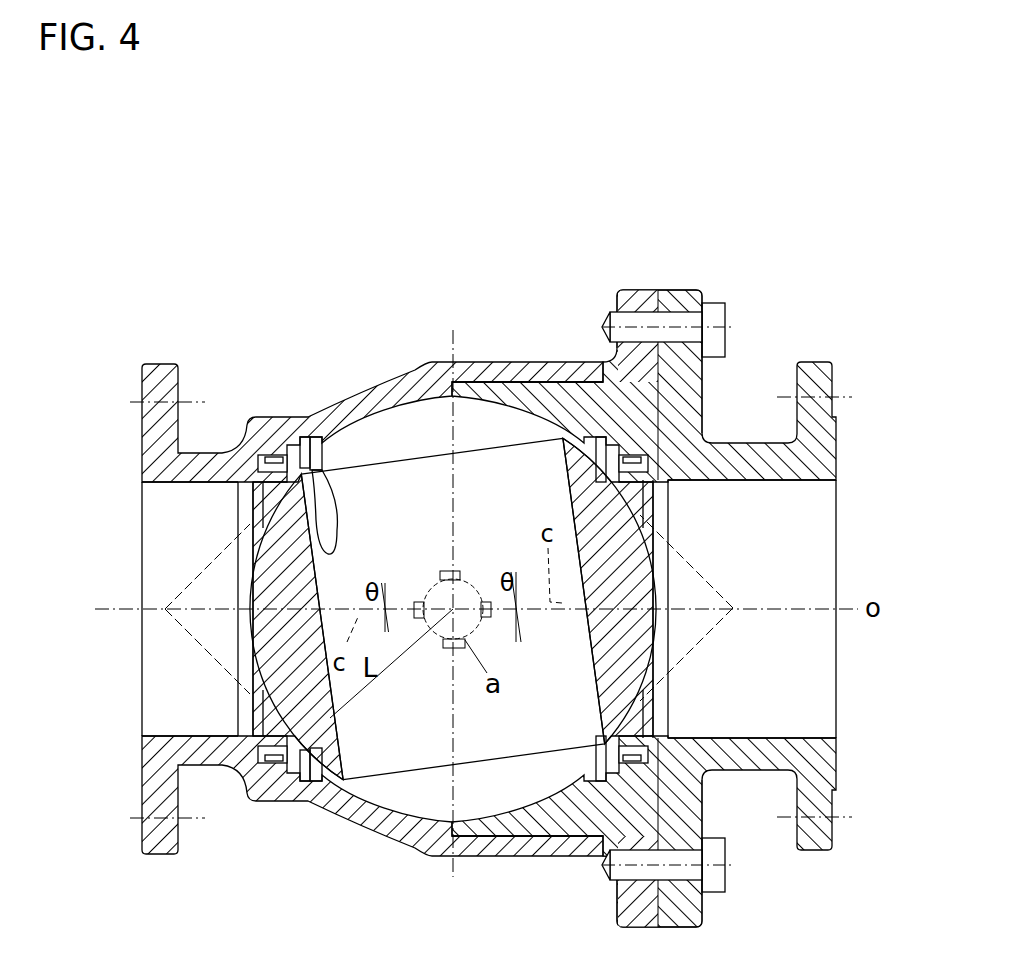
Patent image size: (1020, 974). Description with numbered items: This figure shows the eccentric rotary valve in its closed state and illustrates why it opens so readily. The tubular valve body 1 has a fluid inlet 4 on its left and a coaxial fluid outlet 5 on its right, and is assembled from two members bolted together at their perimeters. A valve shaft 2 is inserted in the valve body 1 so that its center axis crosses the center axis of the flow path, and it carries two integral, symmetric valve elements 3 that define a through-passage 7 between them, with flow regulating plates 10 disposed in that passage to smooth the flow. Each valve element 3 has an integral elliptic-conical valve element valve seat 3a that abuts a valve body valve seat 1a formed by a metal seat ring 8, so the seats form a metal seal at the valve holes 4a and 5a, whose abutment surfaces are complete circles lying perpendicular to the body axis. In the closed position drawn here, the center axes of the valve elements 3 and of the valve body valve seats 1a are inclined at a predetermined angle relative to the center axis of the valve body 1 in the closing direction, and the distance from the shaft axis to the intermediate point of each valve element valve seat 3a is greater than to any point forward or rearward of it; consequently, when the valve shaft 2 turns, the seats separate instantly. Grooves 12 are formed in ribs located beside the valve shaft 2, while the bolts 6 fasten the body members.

The valve body 1 is at (503, 863).
The valve body valve seat 1a is at (577, 750).
The valve shaft 2 is at (487, 673).
The valve element 3 is at (507, 483).
The valve element valve seat 3a is at (262, 462).
The fluid inlet 4 is at (165, 647).
The valve hole 4a is at (262, 703).
The fluid outlet 5 is at (763, 527).
The valve hole 5a is at (643, 707).
The bolt 6 is at (666, 325).
The through-passage 7 is at (317, 436).
The seat ring 8 is at (637, 455).
The flow regulating plate 10 is at (483, 473).
The groove 12 is at (600, 437).